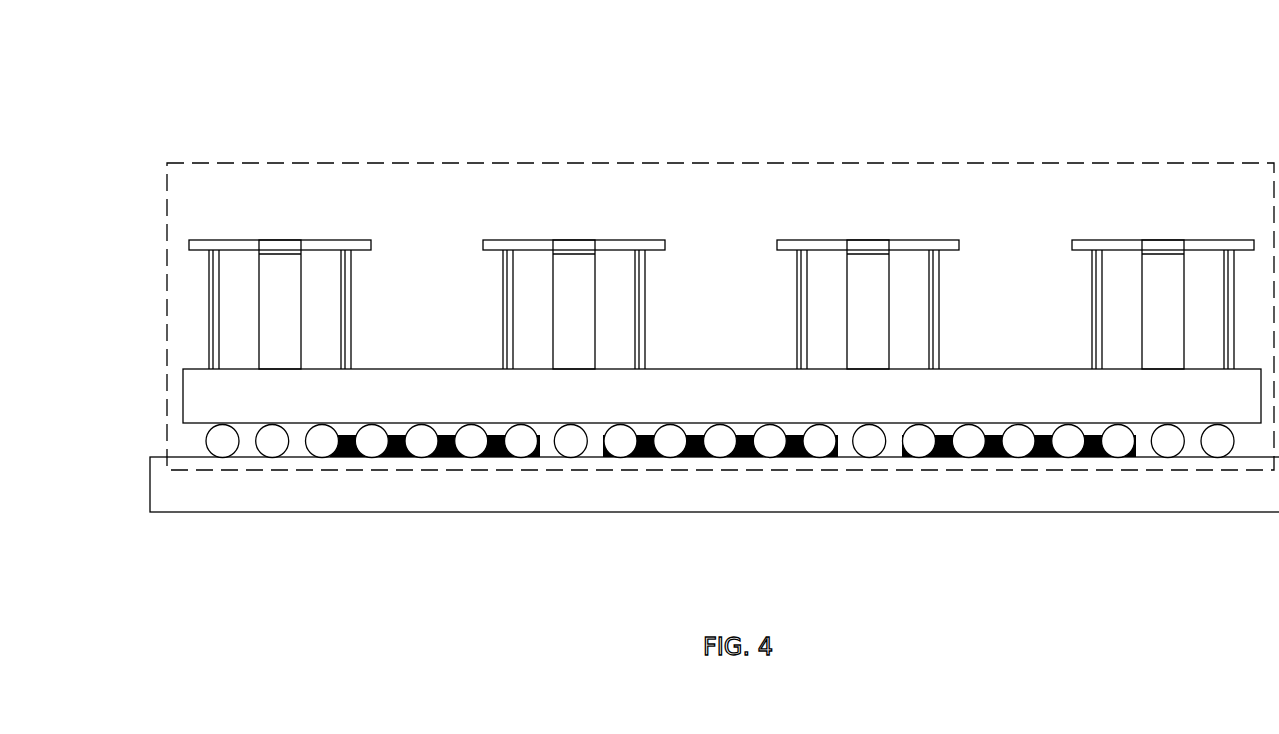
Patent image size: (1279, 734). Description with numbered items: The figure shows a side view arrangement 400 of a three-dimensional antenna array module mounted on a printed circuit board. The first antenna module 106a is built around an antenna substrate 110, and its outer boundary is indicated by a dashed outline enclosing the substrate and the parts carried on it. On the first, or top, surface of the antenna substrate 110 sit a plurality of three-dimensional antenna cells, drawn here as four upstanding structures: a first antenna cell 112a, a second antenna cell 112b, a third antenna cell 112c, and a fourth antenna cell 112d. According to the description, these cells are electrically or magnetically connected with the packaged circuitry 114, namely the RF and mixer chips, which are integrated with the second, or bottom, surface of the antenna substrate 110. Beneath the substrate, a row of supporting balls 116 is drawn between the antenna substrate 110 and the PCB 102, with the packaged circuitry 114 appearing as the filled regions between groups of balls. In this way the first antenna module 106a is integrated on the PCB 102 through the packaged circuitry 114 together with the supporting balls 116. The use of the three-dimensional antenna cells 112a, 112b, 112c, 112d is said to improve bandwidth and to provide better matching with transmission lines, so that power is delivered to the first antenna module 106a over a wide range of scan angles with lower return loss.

The side view arrangement 400 is at (1130, 96).
The first antenna module 106a is at (687, 163).
The PCB 102 is at (714, 484).
The antenna substrate 110 is at (722, 396).
The first antenna cell 112a is at (312, 240).
The second antenna cell 112b is at (606, 240).
The third antenna cell 112c is at (900, 240).
The fourth antenna cell 112d is at (1195, 240).
The packaged circuitry 114 is at (350, 458).
The supporting balls 116 is at (206, 445).